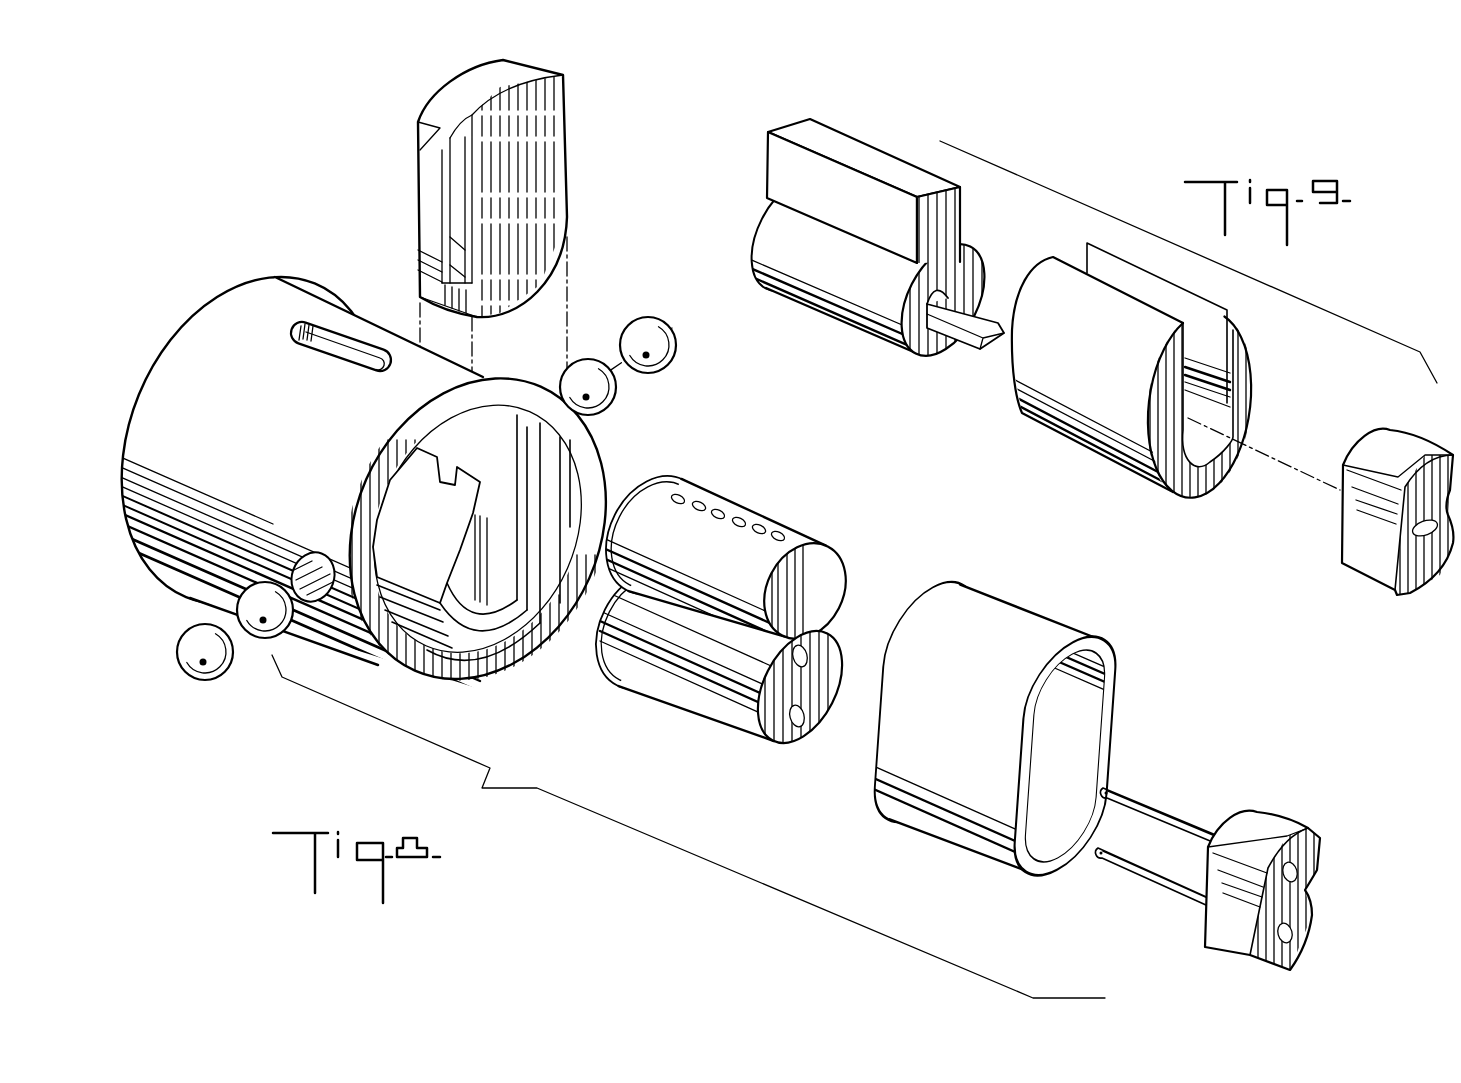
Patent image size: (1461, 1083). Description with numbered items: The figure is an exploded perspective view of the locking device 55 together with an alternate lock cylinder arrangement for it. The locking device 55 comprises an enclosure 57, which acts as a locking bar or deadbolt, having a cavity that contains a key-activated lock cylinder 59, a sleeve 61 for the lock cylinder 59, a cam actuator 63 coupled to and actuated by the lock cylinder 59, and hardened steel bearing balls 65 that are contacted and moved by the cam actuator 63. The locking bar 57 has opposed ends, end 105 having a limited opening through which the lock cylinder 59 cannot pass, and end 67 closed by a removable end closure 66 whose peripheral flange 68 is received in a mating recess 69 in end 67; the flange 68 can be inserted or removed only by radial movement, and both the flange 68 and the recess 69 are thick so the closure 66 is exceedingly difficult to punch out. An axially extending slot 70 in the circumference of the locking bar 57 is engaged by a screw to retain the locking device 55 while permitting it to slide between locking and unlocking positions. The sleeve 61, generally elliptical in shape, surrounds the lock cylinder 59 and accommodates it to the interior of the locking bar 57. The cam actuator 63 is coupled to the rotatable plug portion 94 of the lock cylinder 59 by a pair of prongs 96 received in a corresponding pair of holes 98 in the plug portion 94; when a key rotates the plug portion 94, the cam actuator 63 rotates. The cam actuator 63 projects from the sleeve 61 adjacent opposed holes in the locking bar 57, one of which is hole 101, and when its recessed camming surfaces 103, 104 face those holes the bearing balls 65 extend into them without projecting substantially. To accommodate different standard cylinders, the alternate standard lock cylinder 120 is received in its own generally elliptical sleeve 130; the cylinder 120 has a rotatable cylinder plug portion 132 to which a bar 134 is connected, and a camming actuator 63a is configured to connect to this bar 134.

In FIG. 8, the end 105 is at (178, 328).
In FIG. 8, the axially extending slot 70 is at (342, 328).
In FIG. 8, the peripheral flange 68 is at (433, 188).
In FIG. 8, the removable end closure 66 is at (545, 178).
In FIG. 8, the bearing balls 65 is at (585, 363).
In FIG. 8, the recess 69 is at (447, 477).
In FIG. 8, the hole 101 is at (300, 552).
In FIG. 8, the enclosure 57 is at (207, 547).
In FIG. 8, the end 67 is at (475, 656).
In FIG. 8, the lock cylinder 59 is at (700, 710).
In FIG. 8, the holes 98 is at (804, 652).
In FIG. 8, the rotatable plug portion 94 is at (797, 737).
In FIG. 8, the locking device 55 is at (688, 826).
In FIG. 8, the sleeve 61 is at (960, 827).
In FIG. 8, the prongs 96 is at (1152, 808).
In FIG. 8, the cam actuator 63 is at (1305, 827).
In FIG. 8, the recessed camming surface 103 is at (1227, 918).
In FIG. 8, the recessed camming surface 104 is at (1307, 888).
In FIG. 9, the standard lock cylinder 120 is at (868, 305).
In FIG. 9, the rotatable cylinder plug portion 132 is at (912, 350).
In FIG. 9, the bar 134 is at (990, 345).
In FIG. 9, the sleeve 130 is at (1092, 432).
In FIG. 9, the camming actuator 63a is at (1370, 580).